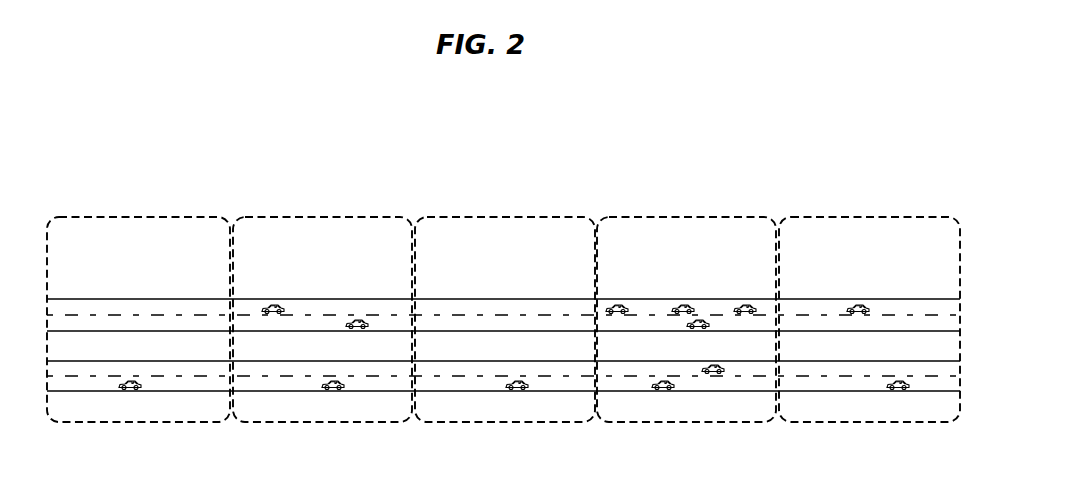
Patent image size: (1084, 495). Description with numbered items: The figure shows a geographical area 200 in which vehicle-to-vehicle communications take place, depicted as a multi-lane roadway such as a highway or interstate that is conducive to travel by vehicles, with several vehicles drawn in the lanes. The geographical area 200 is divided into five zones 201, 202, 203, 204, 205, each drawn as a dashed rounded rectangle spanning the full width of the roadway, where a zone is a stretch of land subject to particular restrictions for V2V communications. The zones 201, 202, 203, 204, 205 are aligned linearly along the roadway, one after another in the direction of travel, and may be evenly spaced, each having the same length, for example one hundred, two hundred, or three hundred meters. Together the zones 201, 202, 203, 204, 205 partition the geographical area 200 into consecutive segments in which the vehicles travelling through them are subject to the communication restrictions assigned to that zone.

The geographical area 200 is at (735, 85).
The zone 201 is at (186, 250).
The zone 202 is at (368, 250).
The zone 203 is at (549, 250).
The zone 204 is at (732, 250).
The zone 205 is at (913, 250).